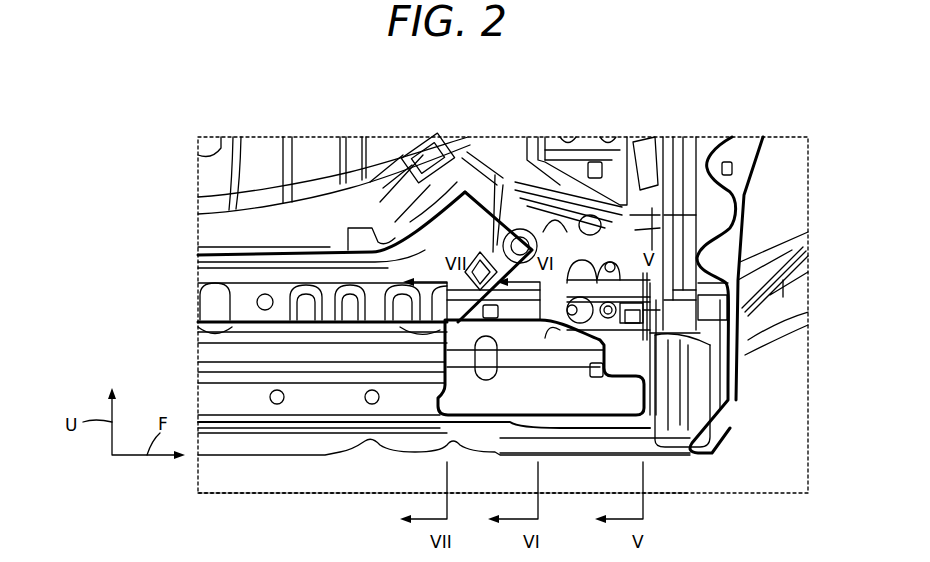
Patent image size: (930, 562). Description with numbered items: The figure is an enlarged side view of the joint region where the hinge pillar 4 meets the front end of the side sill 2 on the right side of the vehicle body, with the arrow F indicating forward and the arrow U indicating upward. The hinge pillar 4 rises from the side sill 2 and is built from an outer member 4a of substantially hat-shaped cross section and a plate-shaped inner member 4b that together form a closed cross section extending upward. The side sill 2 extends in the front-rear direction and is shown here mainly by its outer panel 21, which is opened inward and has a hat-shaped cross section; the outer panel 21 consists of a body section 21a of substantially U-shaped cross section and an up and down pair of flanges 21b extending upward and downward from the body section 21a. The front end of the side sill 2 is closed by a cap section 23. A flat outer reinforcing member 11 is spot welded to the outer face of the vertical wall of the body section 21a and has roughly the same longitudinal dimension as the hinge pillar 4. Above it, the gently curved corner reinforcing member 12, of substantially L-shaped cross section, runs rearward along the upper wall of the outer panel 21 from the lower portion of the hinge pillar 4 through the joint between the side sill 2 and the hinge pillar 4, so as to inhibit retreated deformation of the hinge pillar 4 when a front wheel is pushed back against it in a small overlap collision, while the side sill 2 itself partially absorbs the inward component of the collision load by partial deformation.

The side sill 2 is at (676, 466).
The hinge pillar 4 is at (752, 120).
The outer member 4a is at (688, 182).
The inner member 4b is at (548, 133).
The outer reinforcing member 11 is at (573, 397).
The corner reinforcing member 12 is at (250, 302).
The outer panel 21 is at (316, 460).
The body section 21a is at (237, 400).
The flanges 21b is at (272, 442).
The cap section 23 is at (700, 403).